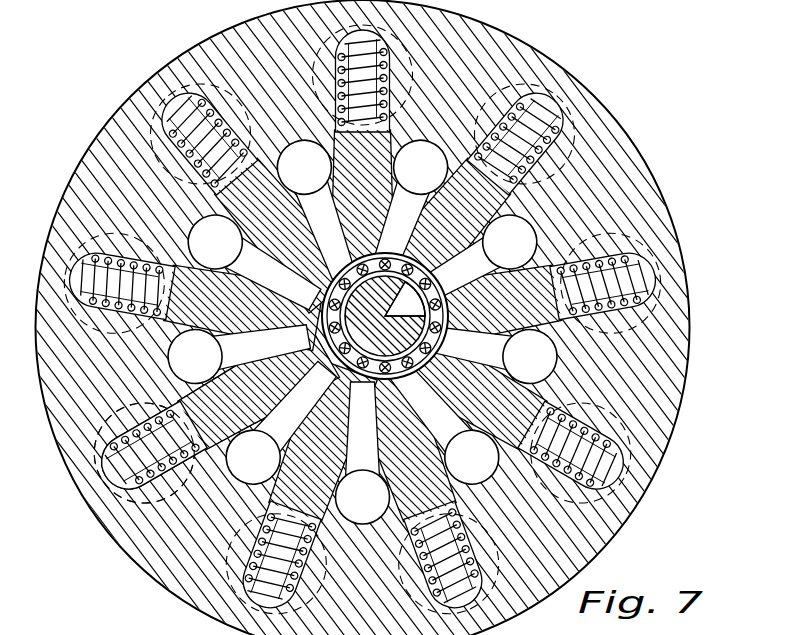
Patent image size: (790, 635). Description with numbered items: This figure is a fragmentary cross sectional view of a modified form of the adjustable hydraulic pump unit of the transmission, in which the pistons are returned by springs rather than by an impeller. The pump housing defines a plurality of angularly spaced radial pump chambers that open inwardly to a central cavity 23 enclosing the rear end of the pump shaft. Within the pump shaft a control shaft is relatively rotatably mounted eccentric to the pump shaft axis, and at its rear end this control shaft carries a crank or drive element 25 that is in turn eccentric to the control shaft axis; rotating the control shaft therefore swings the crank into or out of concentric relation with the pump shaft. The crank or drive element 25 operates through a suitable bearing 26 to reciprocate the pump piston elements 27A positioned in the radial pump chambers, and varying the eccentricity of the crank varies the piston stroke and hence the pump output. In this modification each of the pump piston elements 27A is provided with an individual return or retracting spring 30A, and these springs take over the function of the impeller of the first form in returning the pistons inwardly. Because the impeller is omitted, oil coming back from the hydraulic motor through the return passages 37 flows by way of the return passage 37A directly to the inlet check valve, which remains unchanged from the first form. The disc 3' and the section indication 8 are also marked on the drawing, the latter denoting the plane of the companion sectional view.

The rotor disc 3' is at (363, 317).
The section line 8-8 / hub shaft 8 is at (32, 458).
The central cavity 23 is at (472, 264).
The crank or drive element 25 is at (405, 209).
The bearing 26 is at (319, 209).
The pump piston elements 27A is at (238, 349).
The return or retracting springs 30A is at (642, 264).
The return passages 37 is at (175, 498).
The return passage 37A is at (128, 360).